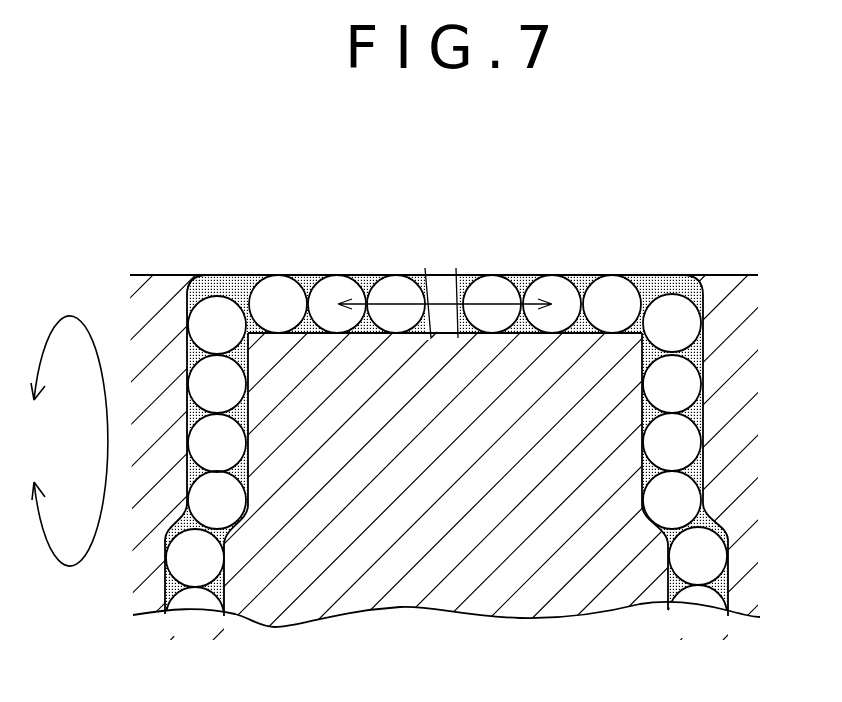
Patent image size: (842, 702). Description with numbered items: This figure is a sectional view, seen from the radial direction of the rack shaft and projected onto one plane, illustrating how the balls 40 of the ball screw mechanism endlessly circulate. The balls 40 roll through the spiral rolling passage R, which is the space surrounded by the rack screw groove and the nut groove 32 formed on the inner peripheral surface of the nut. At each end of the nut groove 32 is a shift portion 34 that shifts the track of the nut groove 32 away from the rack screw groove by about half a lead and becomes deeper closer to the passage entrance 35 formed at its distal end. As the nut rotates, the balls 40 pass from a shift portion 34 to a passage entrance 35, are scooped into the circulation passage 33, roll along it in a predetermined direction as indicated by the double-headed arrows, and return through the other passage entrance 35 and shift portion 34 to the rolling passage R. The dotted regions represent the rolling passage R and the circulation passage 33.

The rolling passage R is at (228, 296).
The nut groove 32 is at (183, 597).
The circulation passage 33 is at (659, 273).
The shift portion 34 is at (246, 565).
The passage entrance 35 is at (269, 508).
The ball 40 is at (208, 569).